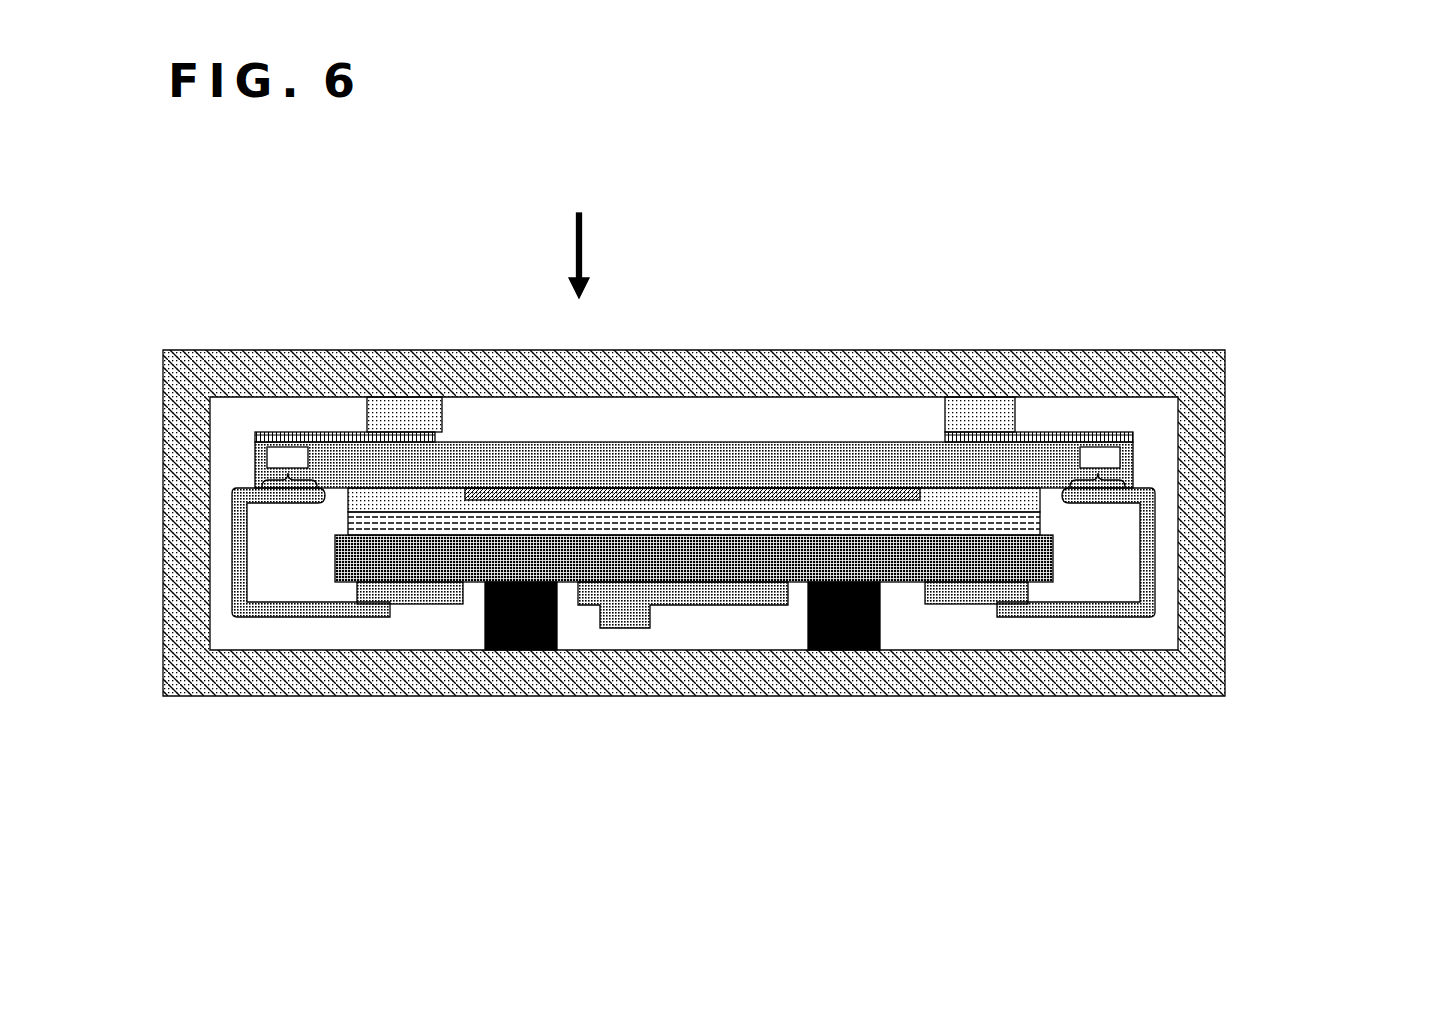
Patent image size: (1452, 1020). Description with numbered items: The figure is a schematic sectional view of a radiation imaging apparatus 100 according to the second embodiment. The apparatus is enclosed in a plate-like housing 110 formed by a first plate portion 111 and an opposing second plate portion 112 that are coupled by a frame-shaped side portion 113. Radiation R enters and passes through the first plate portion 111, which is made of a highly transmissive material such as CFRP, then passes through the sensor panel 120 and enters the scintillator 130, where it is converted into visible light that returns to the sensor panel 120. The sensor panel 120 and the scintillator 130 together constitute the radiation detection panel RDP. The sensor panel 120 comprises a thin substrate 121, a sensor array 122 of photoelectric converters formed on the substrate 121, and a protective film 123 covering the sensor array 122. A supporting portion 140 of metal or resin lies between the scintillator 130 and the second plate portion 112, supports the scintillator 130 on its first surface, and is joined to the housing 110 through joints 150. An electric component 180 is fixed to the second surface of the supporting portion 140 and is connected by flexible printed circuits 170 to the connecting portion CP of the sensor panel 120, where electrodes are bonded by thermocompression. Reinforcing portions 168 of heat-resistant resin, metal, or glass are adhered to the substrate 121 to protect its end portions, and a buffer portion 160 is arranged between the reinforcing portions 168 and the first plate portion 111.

The radiation imaging apparatus 100 is at (803, 516).
The housing 110 is at (803, 515).
The first plate portion 111 is at (1122, 372).
The second plate portion 112 is at (1150, 677).
The side portion 113 is at (1207, 533).
The sensor panel 120 is at (694, 353).
The substrate 121 is at (566, 465).
The sensor array 122 is at (588, 492).
The protective film 123 is at (622, 508).
The scintillator 130 is at (765, 525).
The supporting portion 140 is at (1028, 545).
The joint 150 is at (518, 592).
The buffer portion 160 is at (405, 420).
The reinforcing portion 168 is at (345, 432).
The flexible printed circuit 170 is at (295, 500).
The electric component 180 is at (420, 598).
The radiation R is at (570, 255).
The radiation detection panel RDP is at (694, 365).
The connecting portion CP is at (693, 465).